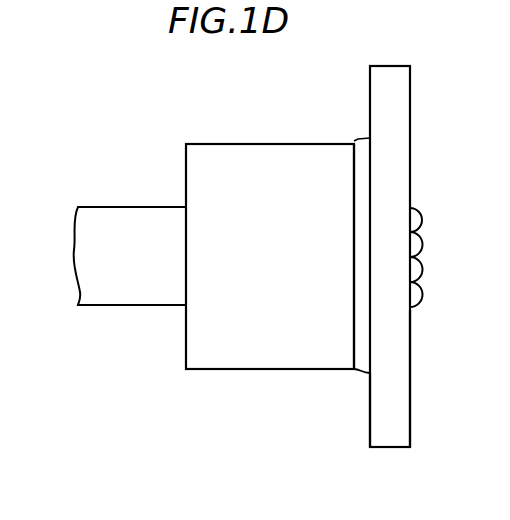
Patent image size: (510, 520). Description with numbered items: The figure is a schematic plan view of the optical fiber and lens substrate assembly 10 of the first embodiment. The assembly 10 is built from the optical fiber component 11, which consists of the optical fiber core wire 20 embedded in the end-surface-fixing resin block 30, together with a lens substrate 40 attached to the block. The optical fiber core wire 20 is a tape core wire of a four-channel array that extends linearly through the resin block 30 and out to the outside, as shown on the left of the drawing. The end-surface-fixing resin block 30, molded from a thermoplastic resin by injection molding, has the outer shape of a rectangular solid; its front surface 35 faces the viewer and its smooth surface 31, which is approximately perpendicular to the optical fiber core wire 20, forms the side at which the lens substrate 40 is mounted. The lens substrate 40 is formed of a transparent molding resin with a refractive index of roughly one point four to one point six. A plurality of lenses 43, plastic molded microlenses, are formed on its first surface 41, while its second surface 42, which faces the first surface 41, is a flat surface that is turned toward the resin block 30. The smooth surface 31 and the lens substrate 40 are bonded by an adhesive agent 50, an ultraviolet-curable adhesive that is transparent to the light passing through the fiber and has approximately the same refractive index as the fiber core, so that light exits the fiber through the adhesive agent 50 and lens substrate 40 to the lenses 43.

The optical fiber and lens substrate assembly 10 is at (170, 130).
The optical fiber component 11 is at (155, 185).
The optical fiber core wire 20 is at (128, 292).
The end-surface-fixing resin block 30 is at (257, 158).
The smooth surface 31 is at (355, 182).
The front surface 35 is at (246, 350).
The lens substrate 40 is at (393, 420).
The first surface 41 is at (412, 328).
The second surface 42 is at (370, 406).
The lenses 43 is at (422, 220).
The adhesive agent 50 is at (360, 142).